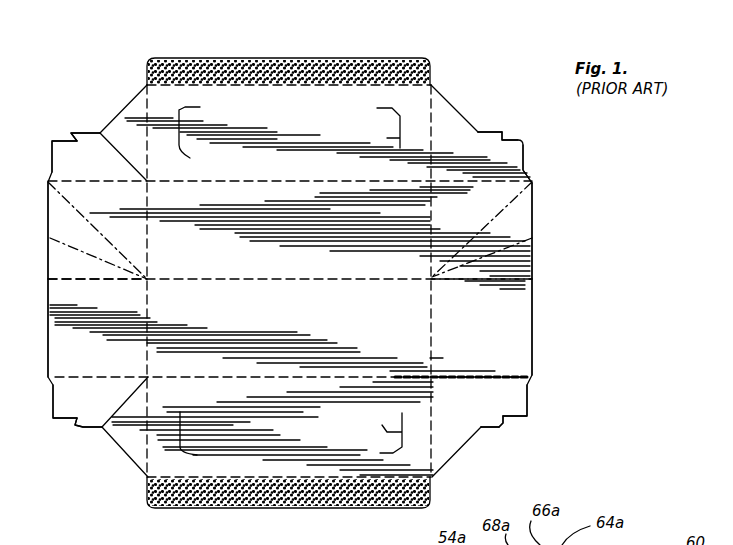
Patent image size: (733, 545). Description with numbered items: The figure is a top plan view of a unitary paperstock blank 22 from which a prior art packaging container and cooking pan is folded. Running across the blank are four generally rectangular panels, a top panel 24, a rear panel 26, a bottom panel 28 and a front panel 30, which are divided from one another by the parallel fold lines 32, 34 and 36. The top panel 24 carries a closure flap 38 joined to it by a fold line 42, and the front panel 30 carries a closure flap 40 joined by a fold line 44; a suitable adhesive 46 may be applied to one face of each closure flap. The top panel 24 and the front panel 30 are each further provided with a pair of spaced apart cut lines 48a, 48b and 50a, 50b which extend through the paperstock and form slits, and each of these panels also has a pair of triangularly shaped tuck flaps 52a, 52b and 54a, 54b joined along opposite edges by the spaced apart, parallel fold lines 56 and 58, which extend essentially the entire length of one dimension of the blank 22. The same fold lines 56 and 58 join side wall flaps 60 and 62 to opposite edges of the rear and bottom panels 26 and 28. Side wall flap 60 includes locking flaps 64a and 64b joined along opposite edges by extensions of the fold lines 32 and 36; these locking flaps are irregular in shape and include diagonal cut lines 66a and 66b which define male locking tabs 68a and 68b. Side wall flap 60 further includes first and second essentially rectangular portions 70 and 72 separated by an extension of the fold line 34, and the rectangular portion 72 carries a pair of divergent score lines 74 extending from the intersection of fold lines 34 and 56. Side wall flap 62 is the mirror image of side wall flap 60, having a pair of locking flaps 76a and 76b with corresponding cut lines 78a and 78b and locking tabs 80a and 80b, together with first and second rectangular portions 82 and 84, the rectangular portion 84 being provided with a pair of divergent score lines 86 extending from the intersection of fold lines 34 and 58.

The blank 22 is at (557, 257).
The top panel 24 is at (340, 111).
The rear panel 26 is at (232, 261).
The bottom panel 28 is at (290, 316).
The front panel 30 is at (350, 440).
The fold line 32 is at (226, 181).
The fold line 34 is at (321, 283).
The fold line 36 is at (281, 382).
The closure flap 38 is at (311, 62).
The closure flap 40 is at (213, 496).
The fold line 42 is at (246, 87).
The fold line 44 is at (266, 477).
The adhesive 46 is at (373, 60).
The cut line 48a is at (205, 137).
The cut line 48b is at (375, 128).
The cut line 50a is at (181, 412).
The cut line 50b is at (383, 431).
The tuck flap 52a is at (123, 115).
The tuck flap 52b is at (438, 112).
The tuck flap 54a is at (129, 458).
The tuck flap 54b is at (455, 443).
The fold line 56 is at (149, 300).
The fold line 58 is at (428, 306).
The side wall flap 60 is at (52, 340).
The side wall flap 62 is at (523, 305).
The locking flap 64a is at (63, 395).
The locking flap 64b is at (58, 140).
The diagonal cut line 66a is at (99, 408).
The diagonal cut line 66b is at (77, 142).
The male locking tab 68a is at (84, 426).
The male locking tab 68b is at (78, 128).
The rectangular portion 70 is at (101, 363).
The rectangular portion 72 is at (135, 238).
The divergent score lines 74 is at (88, 211).
The locking flap 76a is at (527, 412).
The locking flap 76b is at (525, 150).
The cut line 78a is at (531, 400).
The cut line 78b is at (500, 146).
The locking tab 80a is at (497, 430).
The locking tab 80b is at (485, 137).
The rectangular portion 82 is at (488, 329).
The rectangular portion 84 is at (470, 220).
The divergent score lines 86 is at (509, 206).